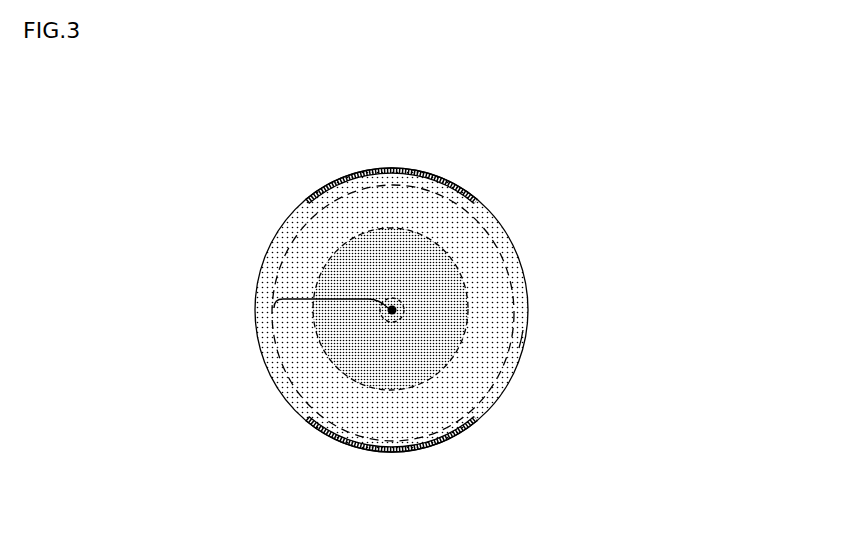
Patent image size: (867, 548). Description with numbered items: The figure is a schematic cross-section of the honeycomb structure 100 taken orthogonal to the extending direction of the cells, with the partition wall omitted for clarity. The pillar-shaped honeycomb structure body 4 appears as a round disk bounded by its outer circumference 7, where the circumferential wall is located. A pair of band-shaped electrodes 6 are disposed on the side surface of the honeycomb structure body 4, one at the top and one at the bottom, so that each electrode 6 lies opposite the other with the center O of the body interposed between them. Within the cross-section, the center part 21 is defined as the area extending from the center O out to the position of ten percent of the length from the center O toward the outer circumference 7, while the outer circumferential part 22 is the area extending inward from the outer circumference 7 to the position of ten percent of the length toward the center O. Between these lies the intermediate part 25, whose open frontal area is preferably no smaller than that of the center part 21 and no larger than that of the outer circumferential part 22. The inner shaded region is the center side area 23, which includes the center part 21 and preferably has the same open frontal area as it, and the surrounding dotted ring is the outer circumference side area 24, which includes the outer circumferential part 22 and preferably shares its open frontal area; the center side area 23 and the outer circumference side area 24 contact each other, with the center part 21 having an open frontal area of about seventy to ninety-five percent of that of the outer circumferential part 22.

The honeycomb structure 100 is at (675, 92).
The honeycomb structure body 4 is at (528, 303).
The electrode 6 is at (422, 170).
The outer circumference 7 is at (525, 338).
The center part 21 is at (386, 314).
The outer circumferential part 22 is at (522, 287).
The center side area 23 is at (423, 275).
The outer circumference side area 24 is at (457, 397).
The intermediate part 25 is at (326, 285).
The center O is at (397, 313).